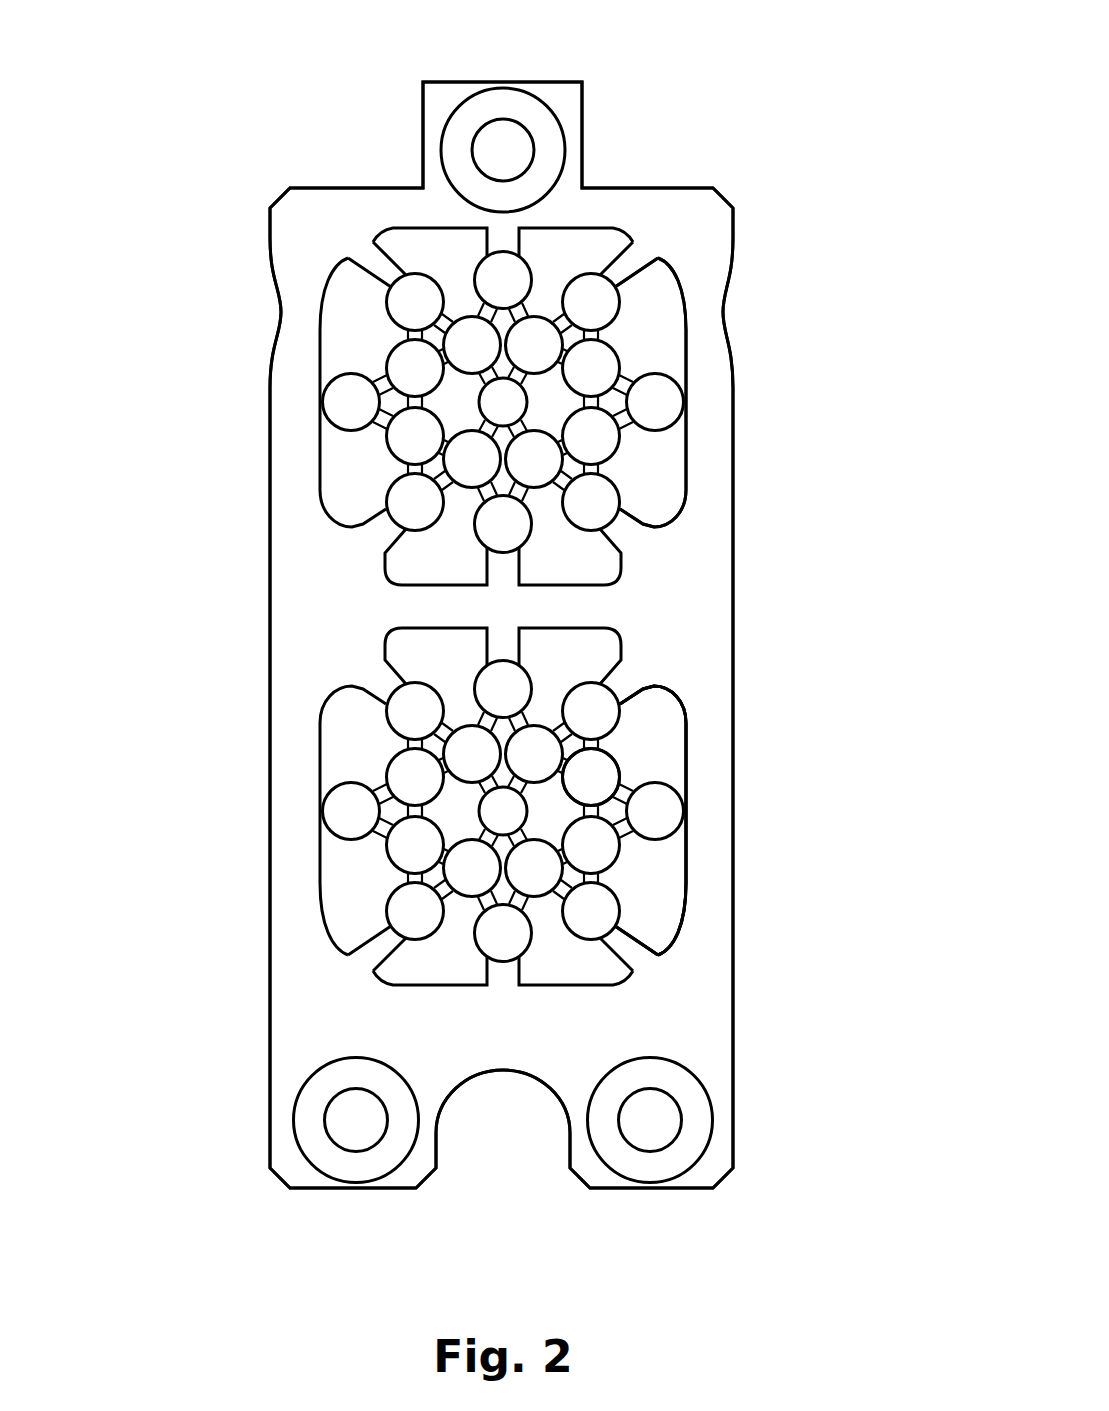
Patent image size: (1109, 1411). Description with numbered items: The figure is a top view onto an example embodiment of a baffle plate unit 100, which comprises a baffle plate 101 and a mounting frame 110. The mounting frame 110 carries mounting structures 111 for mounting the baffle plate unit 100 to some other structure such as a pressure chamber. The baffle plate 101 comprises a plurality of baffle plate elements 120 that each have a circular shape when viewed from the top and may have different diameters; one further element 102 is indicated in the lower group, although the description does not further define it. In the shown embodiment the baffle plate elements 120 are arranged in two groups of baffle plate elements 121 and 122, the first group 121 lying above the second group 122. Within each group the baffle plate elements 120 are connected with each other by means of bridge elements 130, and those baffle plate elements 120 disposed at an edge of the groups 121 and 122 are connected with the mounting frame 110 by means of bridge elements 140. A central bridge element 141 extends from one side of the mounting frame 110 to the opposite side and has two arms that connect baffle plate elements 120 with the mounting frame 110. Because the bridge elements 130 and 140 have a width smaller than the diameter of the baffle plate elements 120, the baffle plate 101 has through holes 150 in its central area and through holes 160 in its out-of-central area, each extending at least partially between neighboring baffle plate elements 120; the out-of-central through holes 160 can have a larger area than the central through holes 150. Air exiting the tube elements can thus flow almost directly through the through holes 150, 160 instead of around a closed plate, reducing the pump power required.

The baffle plate unit 100 is at (740, 92).
The baffle plate 101 is at (640, 475).
The battery cell 102 is at (590, 777).
The mounting frame 110 is at (643, 205).
The mounting structures 111 is at (487, 105).
The baffle plate elements 120 is at (342, 403).
The first group of baffle plate elements 121 is at (422, 256).
The second group of baffle plate elements 122 is at (648, 871).
The bridge elements 130 is at (453, 497).
The bridge elements 140 is at (378, 272).
The central bridge element 141 is at (425, 605).
The through holes 150 is at (443, 423).
The through holes 160 is at (593, 648).